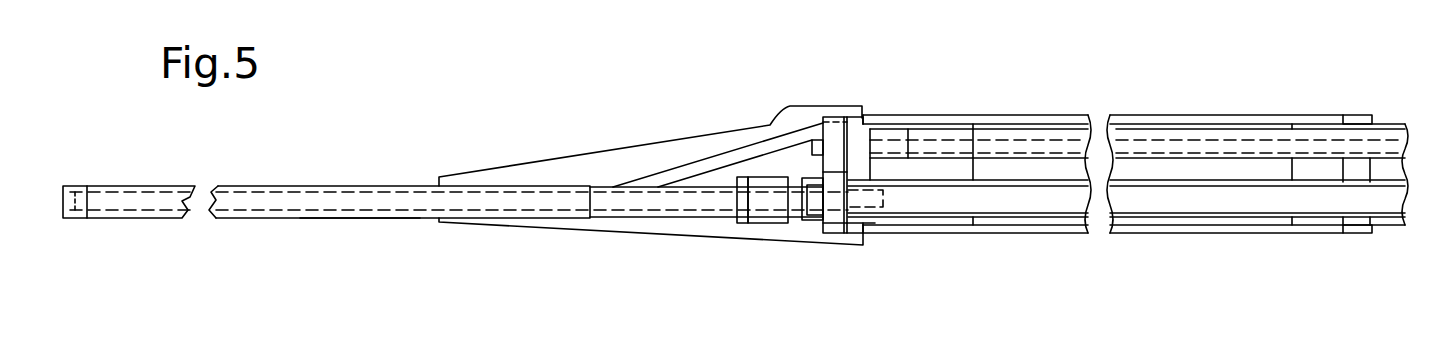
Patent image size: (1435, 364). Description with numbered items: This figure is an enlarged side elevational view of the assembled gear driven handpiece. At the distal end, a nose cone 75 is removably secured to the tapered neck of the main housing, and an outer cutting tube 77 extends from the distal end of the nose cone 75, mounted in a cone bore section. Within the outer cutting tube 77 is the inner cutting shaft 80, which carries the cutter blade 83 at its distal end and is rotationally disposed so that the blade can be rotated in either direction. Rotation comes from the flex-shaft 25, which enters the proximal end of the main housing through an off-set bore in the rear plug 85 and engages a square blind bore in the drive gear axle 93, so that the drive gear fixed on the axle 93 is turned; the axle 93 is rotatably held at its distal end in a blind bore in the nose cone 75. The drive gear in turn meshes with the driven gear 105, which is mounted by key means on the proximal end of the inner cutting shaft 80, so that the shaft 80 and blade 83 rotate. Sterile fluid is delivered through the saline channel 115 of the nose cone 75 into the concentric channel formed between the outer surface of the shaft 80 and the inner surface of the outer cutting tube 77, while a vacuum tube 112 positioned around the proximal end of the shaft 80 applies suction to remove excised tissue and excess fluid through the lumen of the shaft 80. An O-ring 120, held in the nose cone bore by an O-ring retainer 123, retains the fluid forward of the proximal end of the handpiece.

The flex-shaft 25 is at (858, 143).
The nose cone 75 is at (557, 163).
The outer cutting tube 77 is at (380, 186).
The inner cutting shaft 80 is at (335, 212).
The cutter blade 83 is at (70, 184).
The rear plug 85 is at (1360, 115).
The drive gear axle 93 is at (832, 122).
The driven gear 105 is at (838, 220).
The vacuum tube 112 is at (1378, 202).
The saline channel 115 is at (722, 157).
The O-ring 120 is at (742, 219).
The O-ring retainer 123 is at (775, 221).